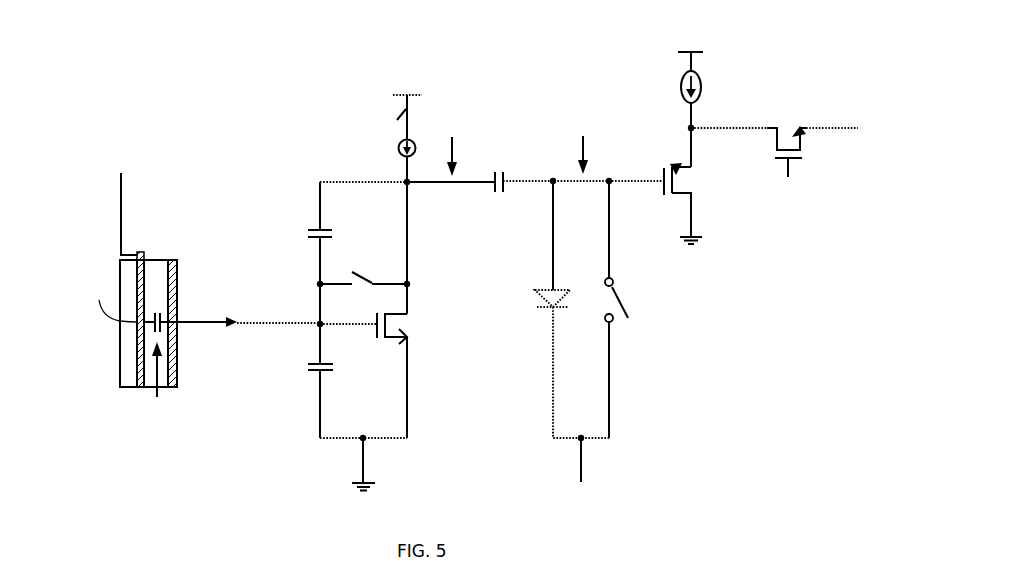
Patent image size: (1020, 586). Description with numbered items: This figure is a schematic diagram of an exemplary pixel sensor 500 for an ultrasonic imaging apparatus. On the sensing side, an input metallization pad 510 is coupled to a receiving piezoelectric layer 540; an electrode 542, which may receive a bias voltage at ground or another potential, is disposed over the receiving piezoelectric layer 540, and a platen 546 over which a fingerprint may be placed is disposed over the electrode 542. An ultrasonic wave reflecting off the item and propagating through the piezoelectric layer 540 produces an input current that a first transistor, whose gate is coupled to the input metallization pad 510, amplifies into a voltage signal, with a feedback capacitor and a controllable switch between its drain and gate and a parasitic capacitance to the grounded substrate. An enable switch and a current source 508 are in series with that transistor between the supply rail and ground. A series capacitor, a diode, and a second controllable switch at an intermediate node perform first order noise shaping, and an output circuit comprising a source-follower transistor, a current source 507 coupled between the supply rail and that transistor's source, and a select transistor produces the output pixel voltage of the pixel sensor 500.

The pixel sensor 500 is at (484, 80).
The current source 507 is at (681, 87).
The current source 508 is at (398, 147).
The input metallization pad 510 is at (173, 260).
The receiving piezoelectric layer 540 is at (157, 258).
The electrode 542 is at (120, 375).
The platen 546 is at (120, 272).